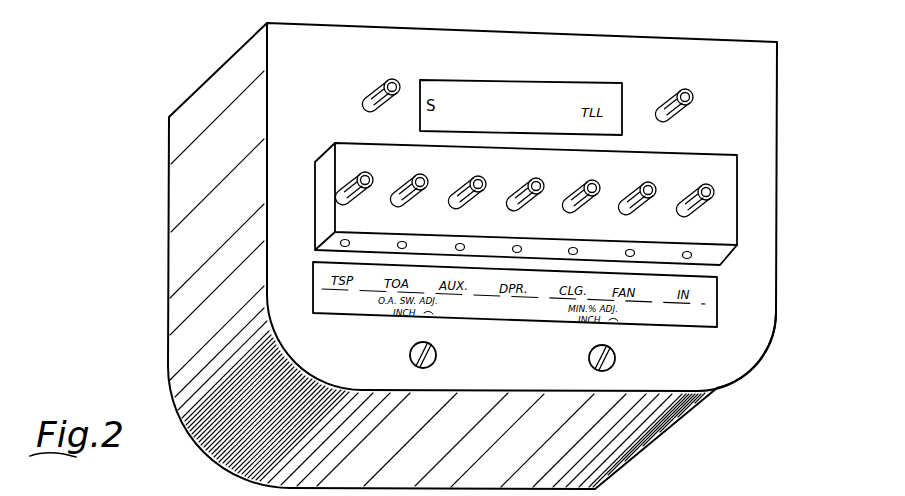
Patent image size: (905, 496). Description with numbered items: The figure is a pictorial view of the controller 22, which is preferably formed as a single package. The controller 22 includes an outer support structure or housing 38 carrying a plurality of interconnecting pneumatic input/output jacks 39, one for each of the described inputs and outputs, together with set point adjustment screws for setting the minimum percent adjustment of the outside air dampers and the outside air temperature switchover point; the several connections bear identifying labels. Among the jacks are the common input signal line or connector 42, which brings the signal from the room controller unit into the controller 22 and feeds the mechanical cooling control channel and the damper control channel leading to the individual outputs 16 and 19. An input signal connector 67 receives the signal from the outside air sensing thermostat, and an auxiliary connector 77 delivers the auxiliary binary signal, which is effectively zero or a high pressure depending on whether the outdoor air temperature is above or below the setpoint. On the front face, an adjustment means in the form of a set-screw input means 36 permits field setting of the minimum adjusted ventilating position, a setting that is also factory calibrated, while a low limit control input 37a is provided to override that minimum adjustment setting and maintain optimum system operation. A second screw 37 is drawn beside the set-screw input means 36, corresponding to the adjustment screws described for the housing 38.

The controller 22 is at (168, 238).
The housing 38 is at (170, 337).
The pneumatic input/output jacks 39 is at (351, 178).
The input signal connector 67 is at (405, 179).
The auxiliary connector 77 is at (465, 181).
The output 19 is at (526, 182).
The output 16 is at (583, 184).
The common input signal line or connector 42 is at (691, 189).
The low limit control input 37a is at (670, 112).
The adjustment screw 37 is at (436, 358).
The set-screw input means 36 is at (614, 364).